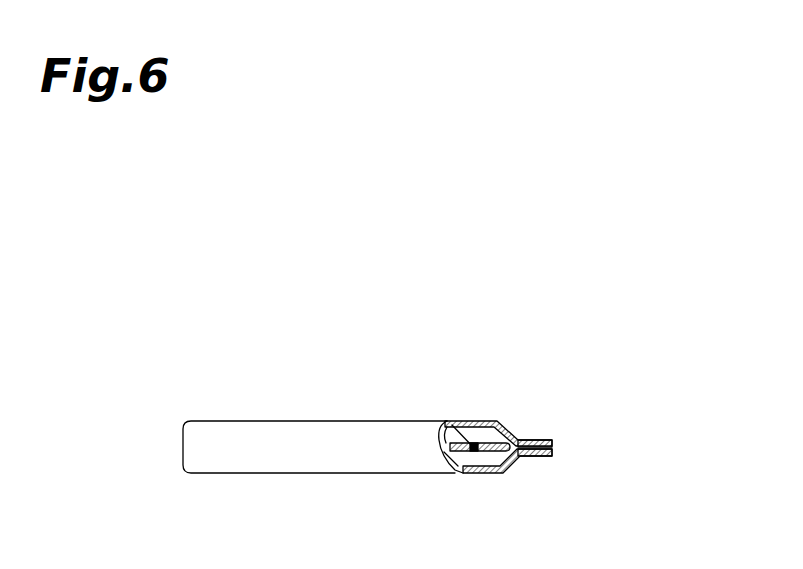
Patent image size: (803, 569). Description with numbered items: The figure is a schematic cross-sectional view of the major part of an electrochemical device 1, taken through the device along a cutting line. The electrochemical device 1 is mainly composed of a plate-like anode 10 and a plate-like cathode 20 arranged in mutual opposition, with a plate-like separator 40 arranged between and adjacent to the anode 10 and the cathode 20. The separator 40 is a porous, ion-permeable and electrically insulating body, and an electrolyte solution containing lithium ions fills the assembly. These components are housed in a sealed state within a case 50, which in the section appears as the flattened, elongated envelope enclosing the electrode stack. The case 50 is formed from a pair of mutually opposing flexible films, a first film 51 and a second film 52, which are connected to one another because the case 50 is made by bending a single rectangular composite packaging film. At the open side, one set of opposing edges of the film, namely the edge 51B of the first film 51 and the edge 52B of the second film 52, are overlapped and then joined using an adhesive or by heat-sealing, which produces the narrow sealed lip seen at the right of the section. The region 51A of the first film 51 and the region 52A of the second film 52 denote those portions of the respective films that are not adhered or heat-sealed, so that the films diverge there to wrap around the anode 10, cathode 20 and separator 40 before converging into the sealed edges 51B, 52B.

The electrochemical device 1 is at (453, 354).
The anode 10 is at (448, 421).
The cathode 20 is at (458, 455).
The separator 40 is at (472, 452).
The case 50 is at (683, 368).
The first film 51 is at (623, 370).
The region of first film not adhered or heat-sealed 51A is at (499, 421).
The edge of first film 51B is at (525, 440).
The second film 52 is at (623, 468).
The region of second film not adhered or heat-sealed 52A is at (500, 474).
The edge of second film 52B is at (527, 457).